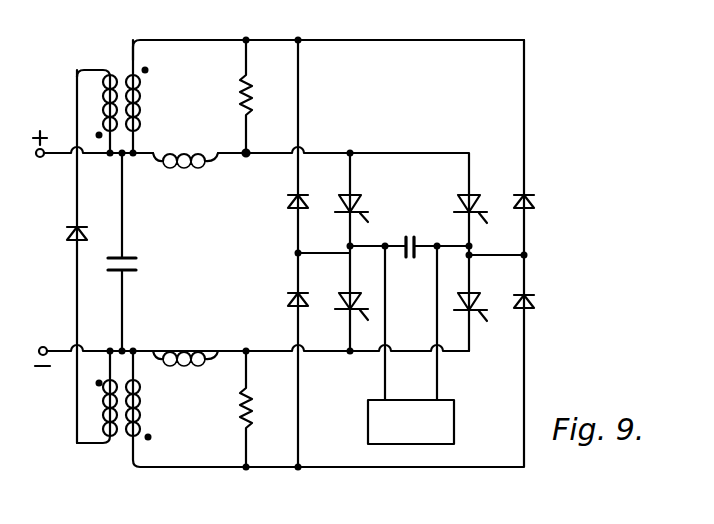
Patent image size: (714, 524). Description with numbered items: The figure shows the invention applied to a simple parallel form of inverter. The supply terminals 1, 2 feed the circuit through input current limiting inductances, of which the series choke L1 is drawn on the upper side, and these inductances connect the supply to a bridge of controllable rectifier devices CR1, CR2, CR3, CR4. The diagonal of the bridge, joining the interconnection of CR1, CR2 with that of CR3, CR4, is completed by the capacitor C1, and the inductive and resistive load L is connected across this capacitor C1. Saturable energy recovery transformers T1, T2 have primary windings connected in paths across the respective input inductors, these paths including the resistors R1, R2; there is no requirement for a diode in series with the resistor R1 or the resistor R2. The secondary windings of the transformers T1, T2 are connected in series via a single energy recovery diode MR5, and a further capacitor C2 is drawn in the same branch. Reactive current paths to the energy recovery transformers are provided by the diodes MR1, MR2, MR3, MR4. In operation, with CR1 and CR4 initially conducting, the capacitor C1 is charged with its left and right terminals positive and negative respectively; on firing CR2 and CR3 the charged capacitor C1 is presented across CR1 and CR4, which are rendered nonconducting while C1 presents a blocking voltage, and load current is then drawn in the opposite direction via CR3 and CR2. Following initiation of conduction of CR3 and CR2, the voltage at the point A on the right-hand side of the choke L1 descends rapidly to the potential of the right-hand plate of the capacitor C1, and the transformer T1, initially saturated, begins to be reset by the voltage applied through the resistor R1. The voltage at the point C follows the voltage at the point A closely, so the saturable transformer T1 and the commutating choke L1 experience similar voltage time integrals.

The supply terminal 1 is at (45, 160).
The supply terminal 2 is at (50, 325).
The point A is at (243, 160).
The point C is at (128, 40).
The saturable energy recovery transformer T1 is at (108, 100).
The saturable energy recovery transformer T2 is at (125, 397).
The resistor R1 is at (234, 92).
The resistor R2 is at (236, 421).
The inductance L1 is at (185, 149).
The capacitor C1 is at (419, 261).
The capacitor C2 is at (144, 264).
The inductive and resistive load L is at (411, 422).
The diode MR1 is at (284, 207).
The diode MR2 is at (284, 305).
The diode MR3 is at (543, 205).
The diode MR4 is at (543, 300).
The energy recovery diode MR5 is at (70, 237).
The controllable rectifier device CR1 is at (364, 203).
The controllable rectifier device CR2 is at (337, 299).
The controllable rectifier device CR3 is at (456, 203).
The controllable rectifier device CR4 is at (488, 297).